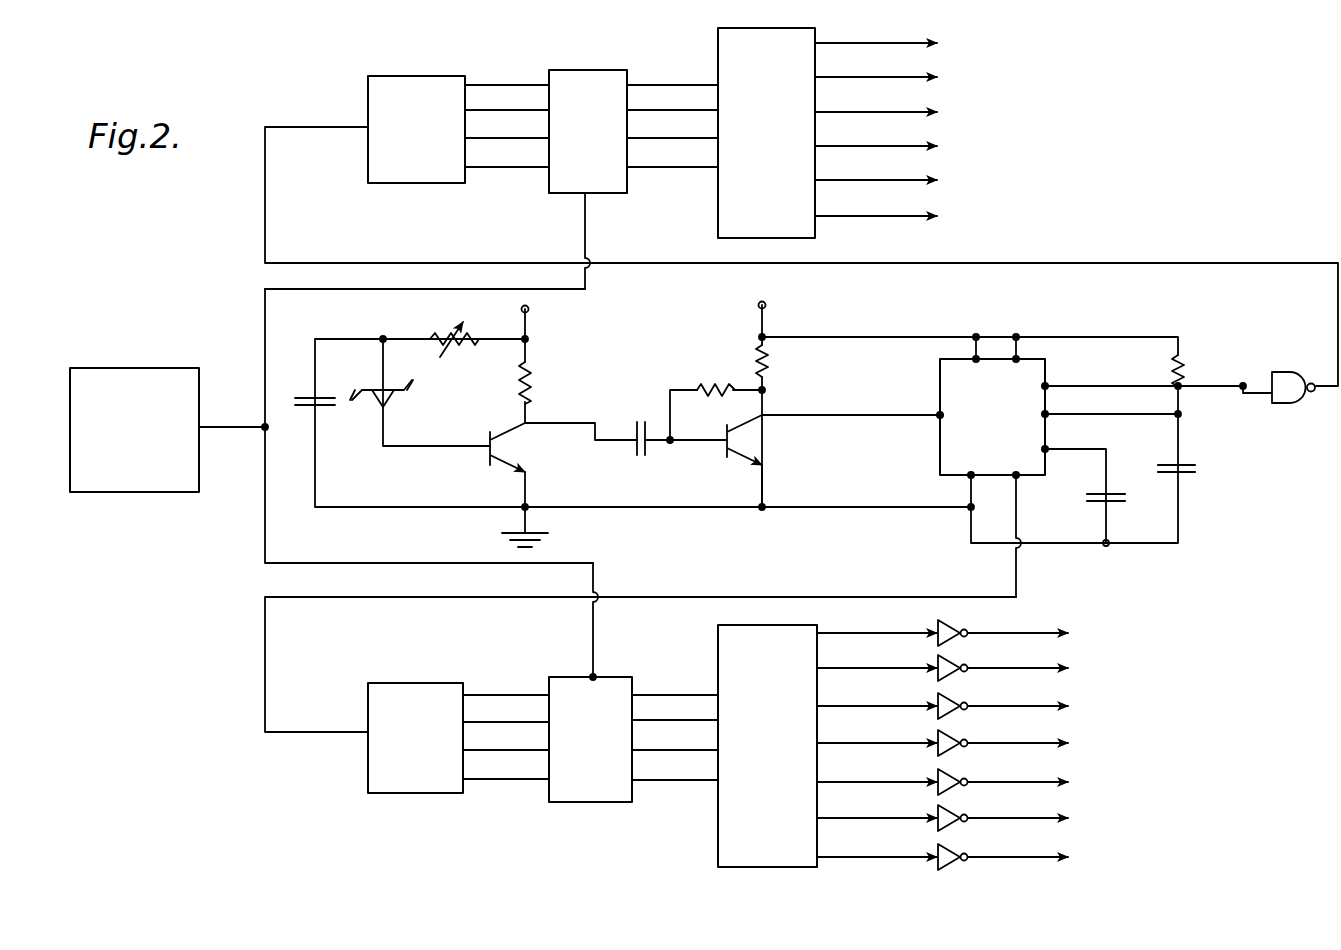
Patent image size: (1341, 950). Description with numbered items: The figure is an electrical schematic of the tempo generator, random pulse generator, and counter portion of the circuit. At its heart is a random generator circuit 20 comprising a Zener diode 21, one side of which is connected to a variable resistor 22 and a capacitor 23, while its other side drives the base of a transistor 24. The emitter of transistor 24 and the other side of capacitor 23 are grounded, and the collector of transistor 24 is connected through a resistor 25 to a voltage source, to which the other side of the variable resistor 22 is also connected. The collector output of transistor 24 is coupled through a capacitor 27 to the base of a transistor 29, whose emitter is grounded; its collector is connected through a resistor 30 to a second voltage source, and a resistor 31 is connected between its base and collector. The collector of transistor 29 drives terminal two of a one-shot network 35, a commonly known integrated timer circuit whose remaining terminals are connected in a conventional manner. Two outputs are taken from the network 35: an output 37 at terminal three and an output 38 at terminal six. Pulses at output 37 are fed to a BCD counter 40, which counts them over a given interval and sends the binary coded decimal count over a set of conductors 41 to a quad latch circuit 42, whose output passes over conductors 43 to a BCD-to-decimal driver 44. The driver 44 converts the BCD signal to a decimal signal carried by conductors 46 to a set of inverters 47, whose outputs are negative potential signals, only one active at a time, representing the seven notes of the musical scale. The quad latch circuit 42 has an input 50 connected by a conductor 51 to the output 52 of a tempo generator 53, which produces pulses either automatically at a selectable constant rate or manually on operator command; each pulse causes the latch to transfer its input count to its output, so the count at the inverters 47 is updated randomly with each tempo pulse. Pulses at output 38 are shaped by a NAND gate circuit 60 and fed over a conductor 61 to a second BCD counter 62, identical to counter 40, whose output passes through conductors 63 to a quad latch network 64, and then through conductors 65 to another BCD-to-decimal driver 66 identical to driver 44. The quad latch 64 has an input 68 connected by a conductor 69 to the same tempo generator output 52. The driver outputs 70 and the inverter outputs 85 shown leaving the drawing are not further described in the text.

The random generator circuit 20 is at (625, 355).
The Zener diode 21 is at (398, 395).
The variable resistor 22 is at (445, 330).
The capacitor 23 is at (298, 400).
The transistor 24 is at (500, 446).
The resistor 25 is at (531, 385).
The capacitor 27 is at (641, 422).
The transistor 29 is at (738, 440).
The resistor 30 is at (768, 362).
The resistor 31 is at (712, 385).
The one-shot network 35 is at (970, 406).
The output 37 is at (1016, 520).
The output 38 is at (1090, 386).
The BCD counter 40 is at (396, 787).
The set of conductors 41 is at (518, 694).
The quad latch circuit 42 is at (586, 787).
The set of conductors 43 is at (688, 692).
The BCD-to-decimal driver 44 is at (752, 855).
The conductors 46 is at (868, 743).
The inverters 47 is at (950, 868).
The input 50 is at (596, 676).
The conductor 51 is at (596, 580).
The output 52 is at (242, 425).
The tempo generator 53 is at (137, 378).
The circuit 60 is at (1288, 397).
The conductor 61 is at (1210, 262).
The BCD counter 62 is at (380, 74).
The conductors 63 is at (496, 110).
The quad latch network 64 is at (602, 70).
The conductors 65 is at (656, 108).
The BCD-to-decimal driver 66 is at (800, 38).
The input 68 is at (589, 196).
The conductor 69 is at (583, 292).
The driver output lines 70 is at (890, 77).
The inverter output lines 85 is at (1035, 633).